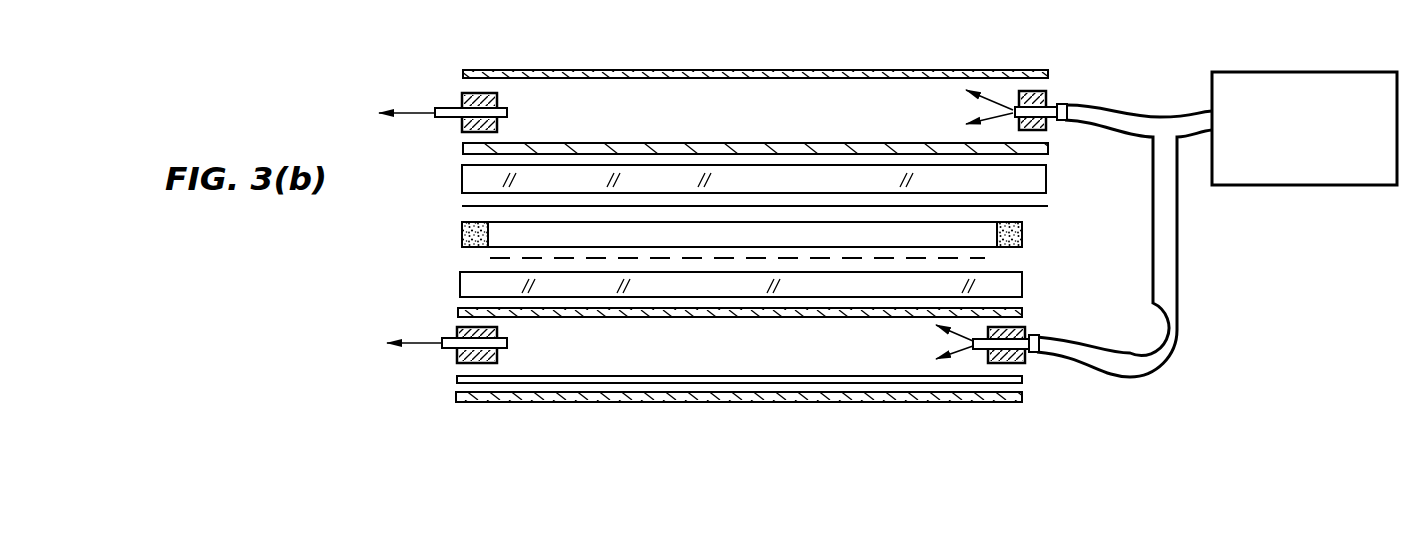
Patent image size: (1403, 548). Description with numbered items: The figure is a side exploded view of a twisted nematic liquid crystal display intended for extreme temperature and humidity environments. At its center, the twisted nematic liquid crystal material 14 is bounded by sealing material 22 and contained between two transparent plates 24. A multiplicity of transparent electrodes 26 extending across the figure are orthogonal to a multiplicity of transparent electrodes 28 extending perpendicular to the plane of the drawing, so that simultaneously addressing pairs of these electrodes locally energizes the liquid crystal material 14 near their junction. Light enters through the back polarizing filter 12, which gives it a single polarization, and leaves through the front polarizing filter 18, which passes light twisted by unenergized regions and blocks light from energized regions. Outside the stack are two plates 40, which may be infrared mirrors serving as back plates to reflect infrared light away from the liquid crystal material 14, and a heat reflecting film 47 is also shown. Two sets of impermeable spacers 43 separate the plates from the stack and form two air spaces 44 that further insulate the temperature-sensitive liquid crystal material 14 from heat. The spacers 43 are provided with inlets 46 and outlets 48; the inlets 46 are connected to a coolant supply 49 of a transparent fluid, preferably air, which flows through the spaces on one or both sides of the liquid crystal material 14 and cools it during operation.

The back polarizing filter 12 is at (458, 312).
The twisted nematic liquid crystal material 14 is at (742, 232).
The front polarizing filter 18 is at (461, 150).
The sealing material 22 is at (460, 233).
The transparent plates 24 is at (1048, 182).
The transparent electrodes 26 is at (462, 206).
The transparent electrodes 28 is at (490, 260).
The plates 40 is at (465, 73).
The impermeable spacers 43 is at (460, 95).
The air spaces 44 is at (775, 119).
The inlets 46 is at (1066, 108).
The heat reflecting film 47 is at (672, 376).
The outlets 48 is at (509, 113).
The coolant supply 49 is at (1293, 168).